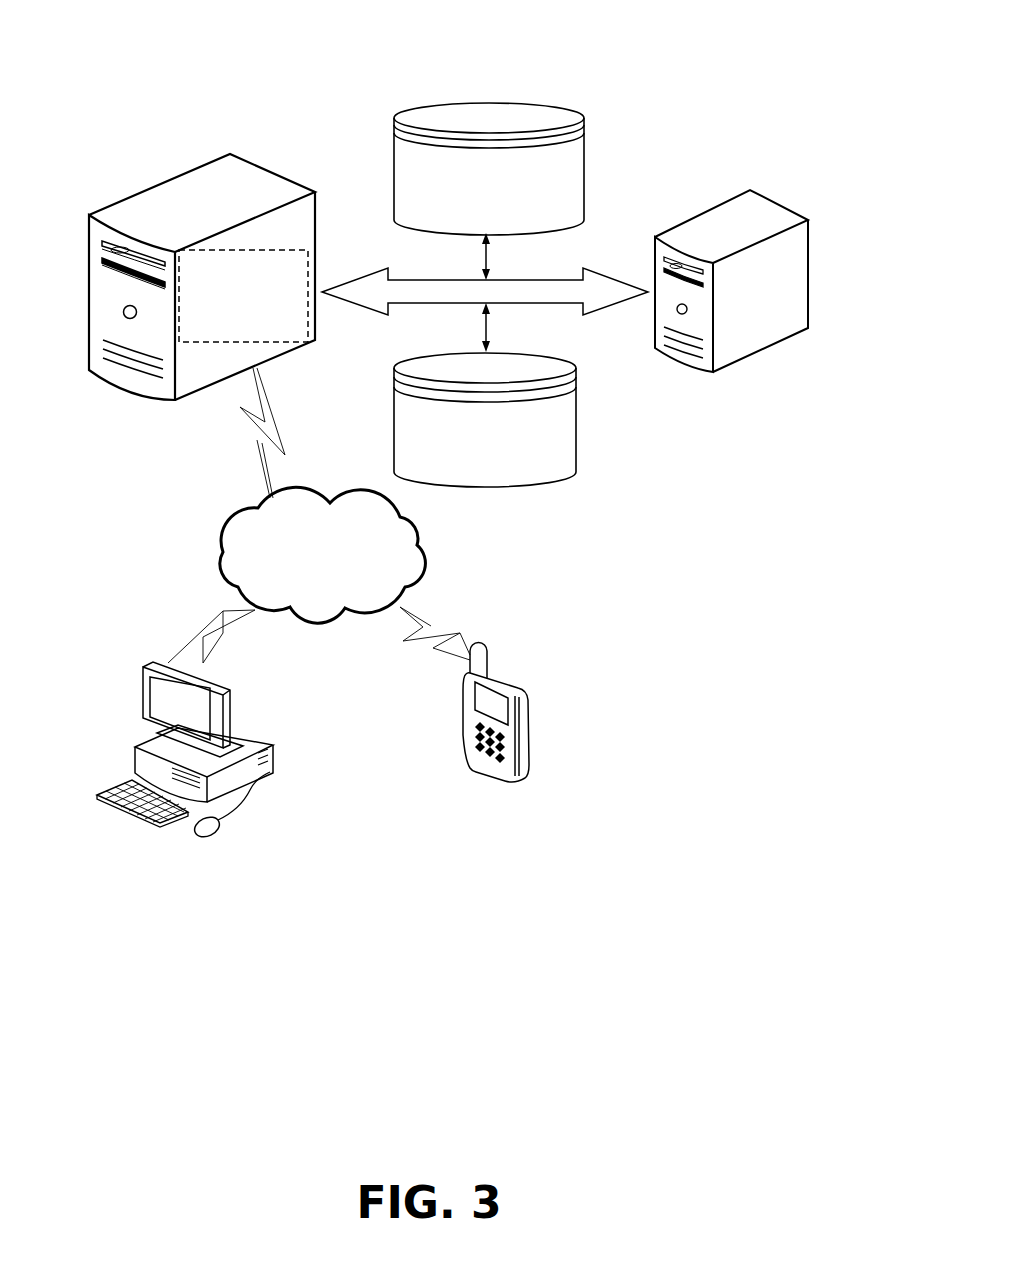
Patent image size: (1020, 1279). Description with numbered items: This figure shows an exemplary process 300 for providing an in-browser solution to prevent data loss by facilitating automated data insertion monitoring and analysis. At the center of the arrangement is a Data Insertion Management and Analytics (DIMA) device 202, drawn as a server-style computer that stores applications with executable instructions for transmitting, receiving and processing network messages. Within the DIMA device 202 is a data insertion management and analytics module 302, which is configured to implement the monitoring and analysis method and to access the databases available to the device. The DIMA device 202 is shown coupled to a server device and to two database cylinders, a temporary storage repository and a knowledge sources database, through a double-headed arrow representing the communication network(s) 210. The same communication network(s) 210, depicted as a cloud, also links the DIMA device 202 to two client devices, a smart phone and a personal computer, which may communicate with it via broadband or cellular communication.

The process 300 is at (286, 76).
The Data Insertion Management and Analytics (DIMA) device 202 is at (160, 185).
The data insertion management and analytics module 302 is at (243, 296).
The communication network(s) 210 is at (434, 428).